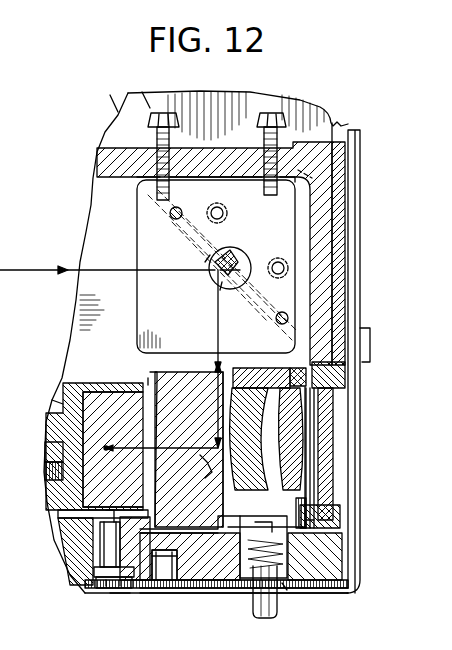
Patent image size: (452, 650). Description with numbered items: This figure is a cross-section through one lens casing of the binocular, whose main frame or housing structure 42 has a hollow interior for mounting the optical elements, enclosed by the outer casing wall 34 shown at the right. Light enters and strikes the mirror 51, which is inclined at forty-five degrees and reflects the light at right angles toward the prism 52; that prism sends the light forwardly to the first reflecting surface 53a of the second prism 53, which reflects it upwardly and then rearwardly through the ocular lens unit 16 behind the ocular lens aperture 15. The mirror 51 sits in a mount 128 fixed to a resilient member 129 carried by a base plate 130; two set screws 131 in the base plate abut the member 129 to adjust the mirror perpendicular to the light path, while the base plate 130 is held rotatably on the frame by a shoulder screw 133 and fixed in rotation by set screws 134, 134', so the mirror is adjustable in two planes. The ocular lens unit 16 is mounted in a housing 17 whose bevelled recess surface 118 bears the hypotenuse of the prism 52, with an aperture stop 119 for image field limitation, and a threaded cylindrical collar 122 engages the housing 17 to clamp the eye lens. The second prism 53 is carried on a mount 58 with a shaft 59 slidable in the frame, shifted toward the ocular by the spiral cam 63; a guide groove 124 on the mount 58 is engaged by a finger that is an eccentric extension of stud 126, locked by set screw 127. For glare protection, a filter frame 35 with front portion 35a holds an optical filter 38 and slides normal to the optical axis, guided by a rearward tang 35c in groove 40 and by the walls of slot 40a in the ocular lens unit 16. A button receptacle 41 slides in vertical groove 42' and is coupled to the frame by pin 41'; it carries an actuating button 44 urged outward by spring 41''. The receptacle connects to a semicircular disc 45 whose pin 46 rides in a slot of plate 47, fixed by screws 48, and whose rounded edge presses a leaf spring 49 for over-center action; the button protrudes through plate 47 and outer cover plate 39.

The set screw 134 is at (153, 146).
The set screw 134' is at (278, 139).
The housing shell 34 is at (342, 228).
The base plate 130 is at (185, 297).
The mount 128 is at (165, 225).
The resilient member 129 is at (294, 230).
The set screw 131 is at (172, 211).
The mirror 51 is at (210, 265).
The shoulder screw 133 is at (222, 290).
The second prism 53 is at (100, 392).
The first reflecting surface 53a is at (92, 392).
The shaft 59 is at (52, 403).
The cam 63 is at (48, 460).
The mount 58 is at (72, 482).
The aperture stop 119 is at (153, 378).
The prism 52 is at (196, 416).
The surface 118 is at (203, 468).
The housing 17 is at (250, 380).
The ocular lens unit 16 is at (295, 380).
The rearward tang 35c is at (238, 482).
The pin 41' is at (281, 446).
The slot 40a is at (330, 395).
The ocular lens aperture 15 is at (370, 360).
The optical filter 38 is at (326, 438).
The front portion 35a is at (320, 470).
The threaded cylindrical collar 122 is at (330, 508).
The filter frame 35 is at (324, 524).
The button receptacle 41 is at (314, 556).
The screw 48 is at (360, 594).
The groove 40 is at (190, 556).
The semicircular disc 45 is at (179, 566).
The leaf spring 49 is at (175, 561).
The pin 46 is at (192, 588).
The plate 47 is at (214, 586).
The vertical groove 42' is at (257, 565).
The actuating button 44 is at (266, 606).
The spring 41'' is at (302, 599).
The guide groove 124 is at (95, 523).
The housing structure 42 is at (81, 538).
The stud 126 is at (100, 553).
The set screw 127 is at (88, 582).
The outer cover plate 39 is at (117, 594).